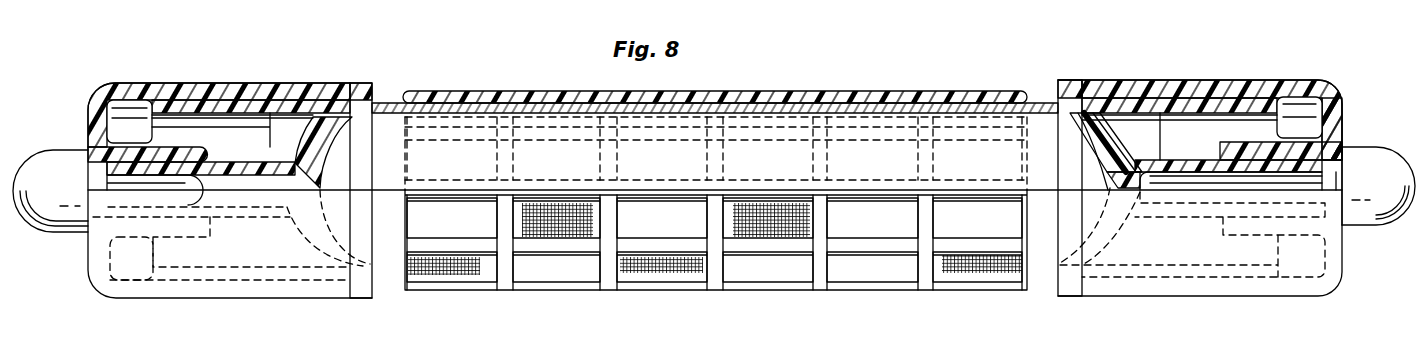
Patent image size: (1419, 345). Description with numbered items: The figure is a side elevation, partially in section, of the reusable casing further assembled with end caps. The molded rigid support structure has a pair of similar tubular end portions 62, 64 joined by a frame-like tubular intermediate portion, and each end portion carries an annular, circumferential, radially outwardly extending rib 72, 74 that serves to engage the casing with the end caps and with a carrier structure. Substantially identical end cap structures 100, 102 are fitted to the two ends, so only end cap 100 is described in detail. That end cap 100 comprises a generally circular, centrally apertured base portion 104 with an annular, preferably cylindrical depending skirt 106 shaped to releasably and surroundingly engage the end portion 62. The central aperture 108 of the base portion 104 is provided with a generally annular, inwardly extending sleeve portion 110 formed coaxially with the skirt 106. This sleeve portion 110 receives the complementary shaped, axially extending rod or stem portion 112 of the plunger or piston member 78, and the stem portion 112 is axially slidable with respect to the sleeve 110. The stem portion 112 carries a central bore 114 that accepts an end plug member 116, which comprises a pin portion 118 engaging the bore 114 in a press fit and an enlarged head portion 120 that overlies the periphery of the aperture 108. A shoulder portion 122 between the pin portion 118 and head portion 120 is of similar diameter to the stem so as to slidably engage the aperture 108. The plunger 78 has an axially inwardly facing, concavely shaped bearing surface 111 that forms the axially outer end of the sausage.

The end cap structure 102 is at (212, 85).
The annular circumferential radially outwardly extending rib 74 is at (362, 82).
The tubular end portion 64 is at (207, 275).
The axially inwardly facing bearing surface 111 is at (1078, 152).
The annular circumferential radially outwardly extending rib 72 is at (1062, 80).
The end cap structure 100 is at (1132, 83).
The depending skirt 106 is at (1191, 86).
The base portion 104 is at (1337, 120).
The central aperture 108 is at (1333, 163).
The enlarged head portion 120 is at (1373, 155).
The plunger or piston member 78 is at (1142, 158).
The rod or stem portion 112 is at (1198, 158).
The sleeve portion 110 is at (1273, 146).
The pin portion 118 is at (1253, 190).
The central bore 114 is at (1292, 176).
The shoulder portion 122 is at (1333, 183).
The end plug member 116 is at (1389, 226).
The tubular end portion 62 is at (1140, 268).